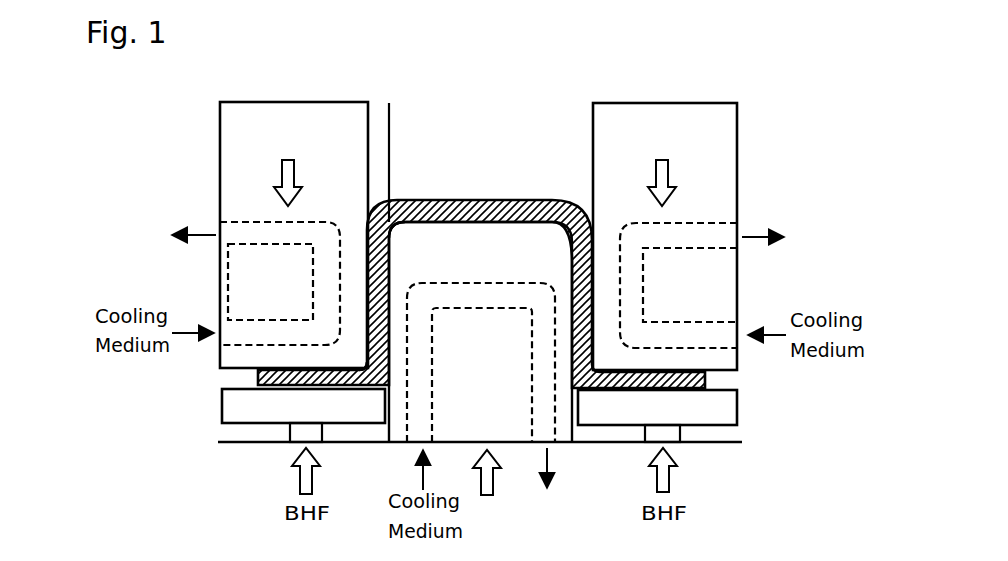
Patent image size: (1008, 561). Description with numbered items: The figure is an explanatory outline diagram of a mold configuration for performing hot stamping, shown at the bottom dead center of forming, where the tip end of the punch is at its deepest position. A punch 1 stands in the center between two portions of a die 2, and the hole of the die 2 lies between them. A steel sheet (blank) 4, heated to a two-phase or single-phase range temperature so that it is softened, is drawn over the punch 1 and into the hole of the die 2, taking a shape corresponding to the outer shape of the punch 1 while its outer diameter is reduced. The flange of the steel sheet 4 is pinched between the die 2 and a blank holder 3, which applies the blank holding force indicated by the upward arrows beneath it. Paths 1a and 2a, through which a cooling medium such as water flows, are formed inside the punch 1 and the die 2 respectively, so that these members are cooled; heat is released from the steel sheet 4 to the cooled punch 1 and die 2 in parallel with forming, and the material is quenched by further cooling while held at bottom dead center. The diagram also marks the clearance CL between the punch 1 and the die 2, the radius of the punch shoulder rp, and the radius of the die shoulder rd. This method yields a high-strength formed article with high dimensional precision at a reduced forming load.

The punch 1 is at (515, 433).
The path 1a is at (412, 408).
The die 2 is at (298, 115).
The path 2a is at (254, 222).
The blank holder 3 is at (246, 420).
The steel sheet (blank) 4 is at (476, 200).
The clearance CL is at (422, 132).
The radius of a punch shoulder rp is at (398, 230).
The radius of a die shoulder rd is at (363, 365).